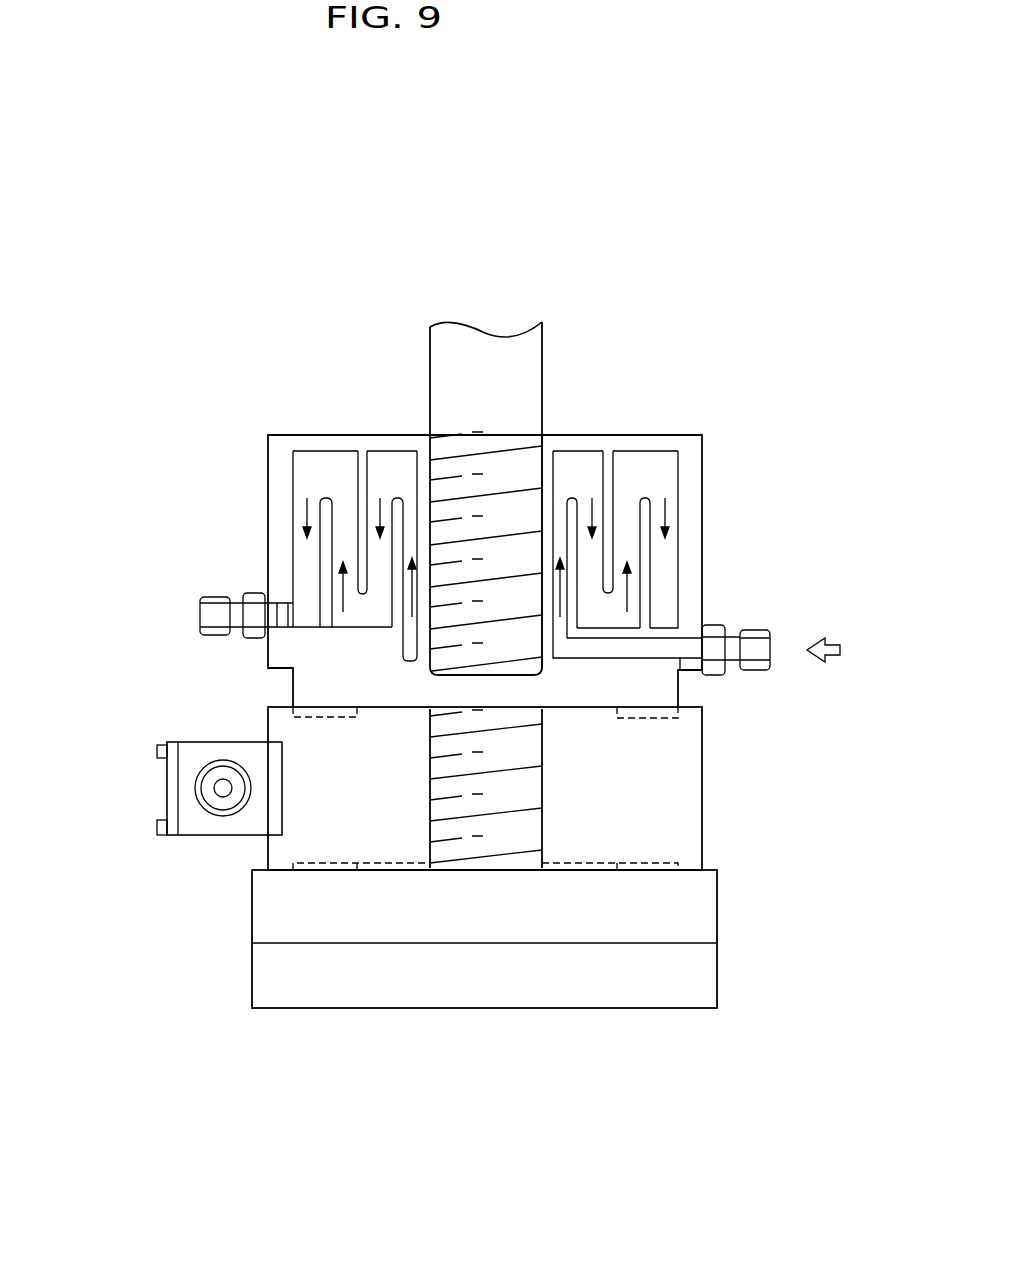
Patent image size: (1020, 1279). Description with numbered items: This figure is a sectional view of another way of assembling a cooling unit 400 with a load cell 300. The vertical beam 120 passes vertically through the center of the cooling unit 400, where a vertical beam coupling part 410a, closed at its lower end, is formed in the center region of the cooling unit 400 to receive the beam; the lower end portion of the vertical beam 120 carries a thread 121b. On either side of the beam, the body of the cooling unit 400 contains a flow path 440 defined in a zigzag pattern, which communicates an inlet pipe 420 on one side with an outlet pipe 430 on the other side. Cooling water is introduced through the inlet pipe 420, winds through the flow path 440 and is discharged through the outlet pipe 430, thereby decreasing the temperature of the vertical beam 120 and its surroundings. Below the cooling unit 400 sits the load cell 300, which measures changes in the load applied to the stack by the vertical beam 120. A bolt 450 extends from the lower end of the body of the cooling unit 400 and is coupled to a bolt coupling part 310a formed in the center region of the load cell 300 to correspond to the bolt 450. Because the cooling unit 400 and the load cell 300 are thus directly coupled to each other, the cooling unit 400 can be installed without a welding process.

The vertical beam 120 is at (440, 357).
The thread 121b is at (453, 480).
The cooling unit 400 is at (264, 468).
The vertical beam coupling part 410a is at (542, 474).
The flow path 440 is at (662, 472).
The inlet pipe 420 is at (757, 643).
The outlet pipe 430 is at (212, 615).
The bolt coupling part 310a is at (545, 751).
The load cell 300 is at (234, 925).
The bolt 450 is at (457, 797).